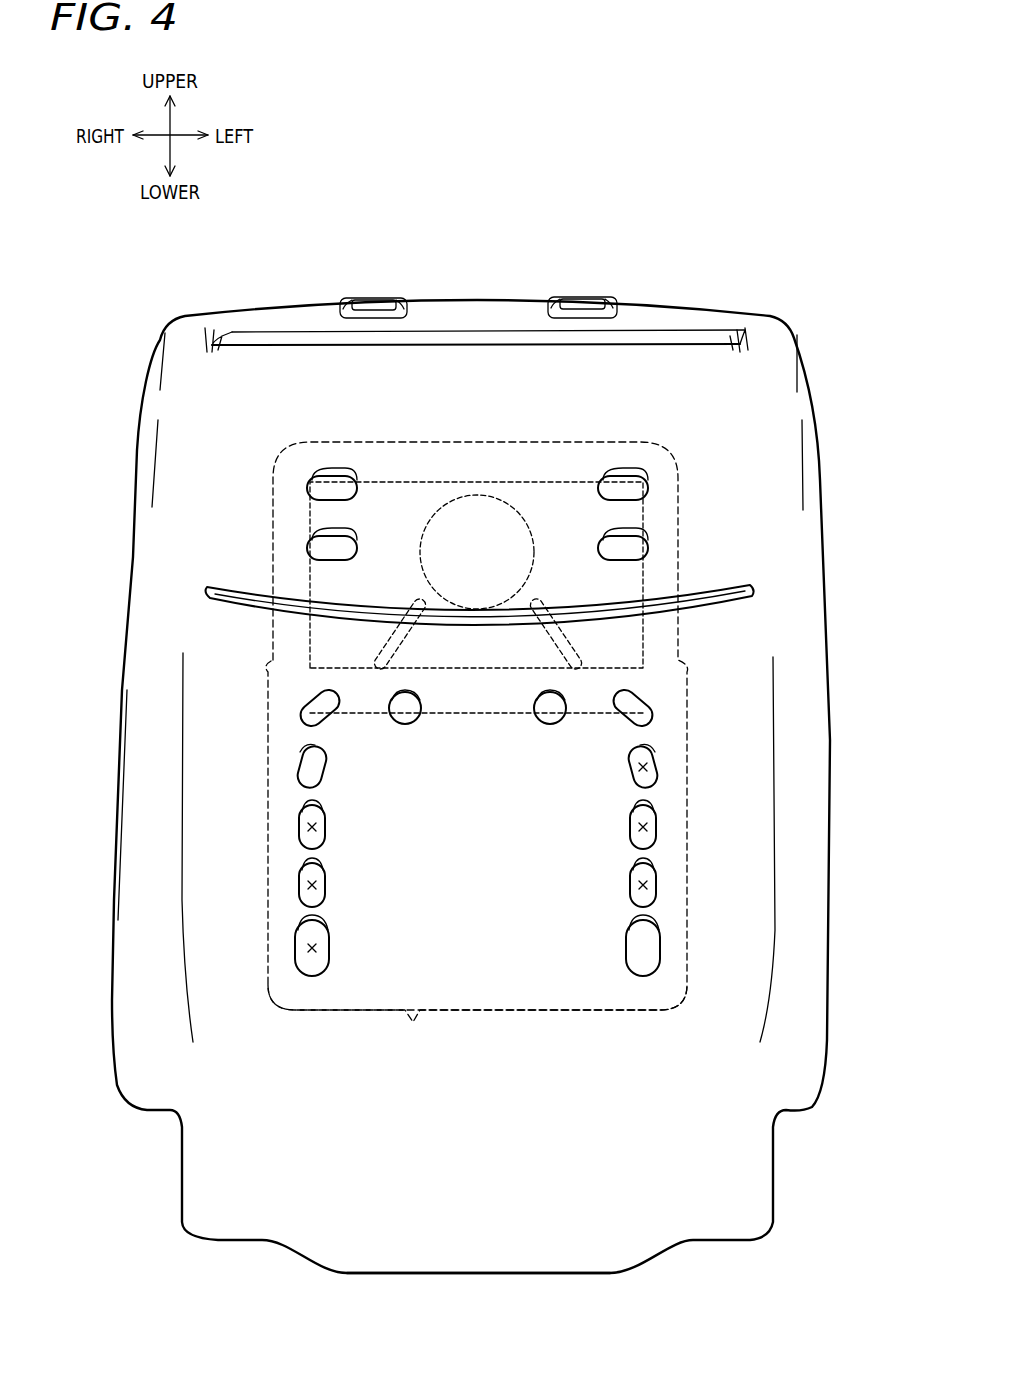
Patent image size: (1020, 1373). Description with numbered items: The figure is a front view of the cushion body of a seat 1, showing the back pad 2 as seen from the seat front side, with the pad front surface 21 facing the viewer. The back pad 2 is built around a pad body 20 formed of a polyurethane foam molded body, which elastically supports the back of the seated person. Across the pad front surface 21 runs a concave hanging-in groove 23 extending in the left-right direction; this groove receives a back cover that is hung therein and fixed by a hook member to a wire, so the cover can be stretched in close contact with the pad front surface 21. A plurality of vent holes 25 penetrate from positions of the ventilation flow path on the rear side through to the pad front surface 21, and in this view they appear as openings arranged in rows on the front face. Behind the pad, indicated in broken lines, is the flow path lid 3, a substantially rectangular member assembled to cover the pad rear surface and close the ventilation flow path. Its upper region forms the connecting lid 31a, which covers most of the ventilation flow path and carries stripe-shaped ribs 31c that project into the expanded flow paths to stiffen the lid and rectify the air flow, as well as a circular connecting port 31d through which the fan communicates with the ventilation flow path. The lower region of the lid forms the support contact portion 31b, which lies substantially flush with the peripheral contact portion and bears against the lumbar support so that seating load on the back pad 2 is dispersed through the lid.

The vehicle seat 1 is at (752, 172).
The back pad 2 is at (671, 303).
The flow path lid 3 is at (682, 528).
The pad body 20 is at (464, 316).
The pad front surface 21 is at (530, 1222).
The hanging-in groove 23 is at (243, 600).
The vent holes 25 is at (322, 938).
The connecting lid 31a is at (394, 510).
The support contact portion 31b is at (500, 968).
The ribs 31c is at (417, 627).
The connecting port 31d is at (492, 497).